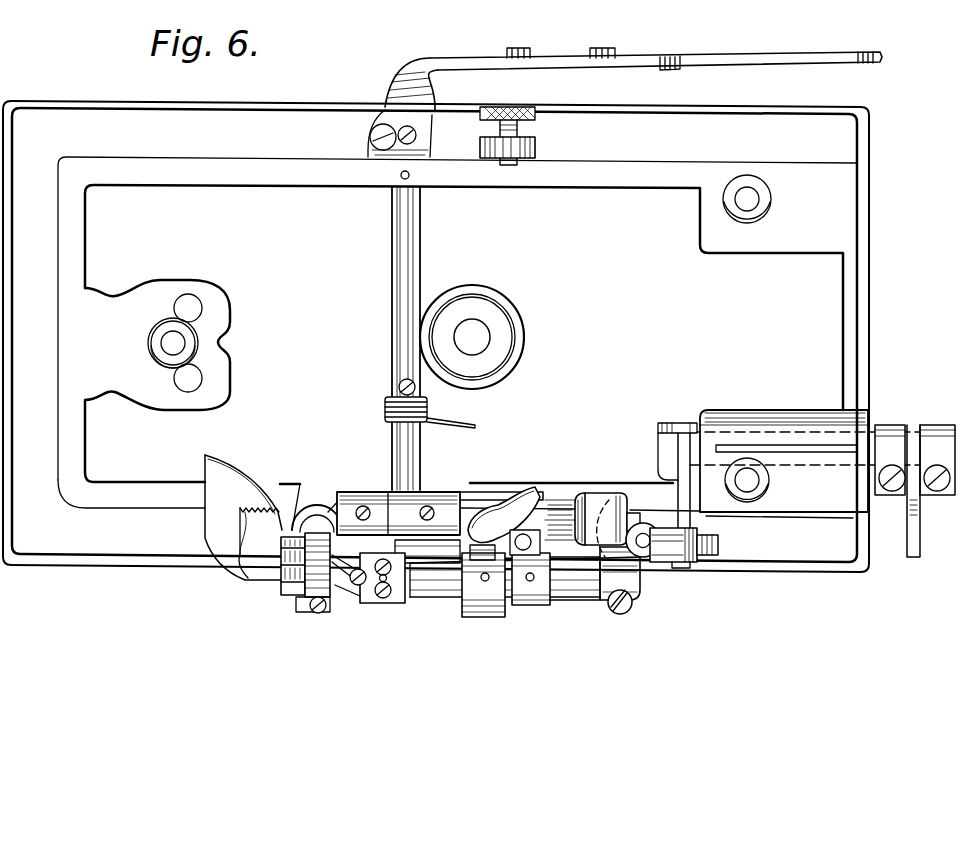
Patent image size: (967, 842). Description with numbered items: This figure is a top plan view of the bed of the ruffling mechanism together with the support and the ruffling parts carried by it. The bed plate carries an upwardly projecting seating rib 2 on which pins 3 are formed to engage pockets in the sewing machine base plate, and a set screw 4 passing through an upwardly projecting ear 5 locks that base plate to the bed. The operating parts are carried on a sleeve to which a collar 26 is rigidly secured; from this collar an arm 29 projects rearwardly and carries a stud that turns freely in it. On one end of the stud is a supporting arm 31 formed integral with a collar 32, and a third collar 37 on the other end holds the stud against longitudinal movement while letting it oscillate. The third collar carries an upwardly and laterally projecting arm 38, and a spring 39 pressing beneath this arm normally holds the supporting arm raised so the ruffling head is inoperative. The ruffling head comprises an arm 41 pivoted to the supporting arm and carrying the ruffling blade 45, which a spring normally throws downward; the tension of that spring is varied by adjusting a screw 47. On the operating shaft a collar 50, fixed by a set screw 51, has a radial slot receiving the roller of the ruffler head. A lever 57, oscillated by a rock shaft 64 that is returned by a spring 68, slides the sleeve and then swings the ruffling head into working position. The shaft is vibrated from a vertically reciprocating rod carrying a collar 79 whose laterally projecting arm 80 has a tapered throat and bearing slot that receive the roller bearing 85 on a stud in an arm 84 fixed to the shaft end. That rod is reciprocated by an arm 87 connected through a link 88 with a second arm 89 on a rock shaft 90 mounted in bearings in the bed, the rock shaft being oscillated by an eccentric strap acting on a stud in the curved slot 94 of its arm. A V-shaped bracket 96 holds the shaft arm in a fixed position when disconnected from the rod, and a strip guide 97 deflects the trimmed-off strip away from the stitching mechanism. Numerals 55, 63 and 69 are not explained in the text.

The seating rib 2 is at (190, 187).
The pins 3 is at (180, 343).
The set screw 4 is at (536, 118).
The ear 5 is at (536, 149).
The collar 26 is at (476, 618).
The arm 29 is at (450, 592).
The supporting arm 31 is at (303, 508).
The collar 32 is at (356, 492).
The third collar 37 is at (530, 500).
The arm 38 is at (500, 490).
The spring 39 is at (494, 562).
The arm 41 is at (323, 565).
The ruffling blade 45 is at (262, 525).
The screw 47 is at (320, 600).
The collar 50 is at (316, 614).
The set screw 51 is at (367, 586).
The screw 55 is at (430, 506).
The lever 57 is at (378, 540).
The sleeve 63 is at (572, 582).
The rock shaft 64 is at (400, 278).
The spring 68 is at (385, 417).
The bar 69 is at (556, 58).
The collar 79 is at (652, 554).
The arm 80 is at (601, 525).
The arm 84 is at (610, 600).
The roller bearing 85 is at (630, 512).
The arm 87 is at (700, 548).
The link 88 is at (708, 546).
The second arm 89 is at (679, 482).
The rock shaft 90 is at (776, 432).
The curved slot 94 is at (921, 520).
The V-shaped bracket 96 is at (372, 602).
The strip guide 97 is at (228, 483).